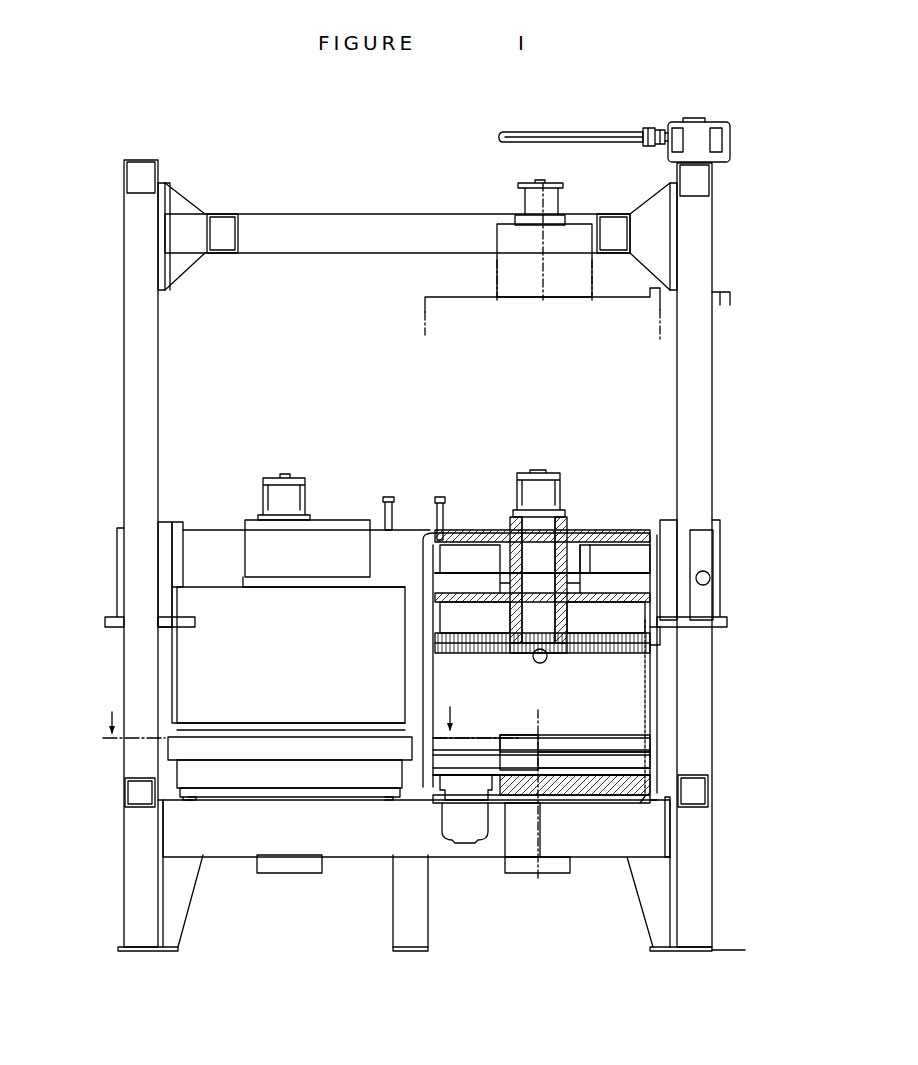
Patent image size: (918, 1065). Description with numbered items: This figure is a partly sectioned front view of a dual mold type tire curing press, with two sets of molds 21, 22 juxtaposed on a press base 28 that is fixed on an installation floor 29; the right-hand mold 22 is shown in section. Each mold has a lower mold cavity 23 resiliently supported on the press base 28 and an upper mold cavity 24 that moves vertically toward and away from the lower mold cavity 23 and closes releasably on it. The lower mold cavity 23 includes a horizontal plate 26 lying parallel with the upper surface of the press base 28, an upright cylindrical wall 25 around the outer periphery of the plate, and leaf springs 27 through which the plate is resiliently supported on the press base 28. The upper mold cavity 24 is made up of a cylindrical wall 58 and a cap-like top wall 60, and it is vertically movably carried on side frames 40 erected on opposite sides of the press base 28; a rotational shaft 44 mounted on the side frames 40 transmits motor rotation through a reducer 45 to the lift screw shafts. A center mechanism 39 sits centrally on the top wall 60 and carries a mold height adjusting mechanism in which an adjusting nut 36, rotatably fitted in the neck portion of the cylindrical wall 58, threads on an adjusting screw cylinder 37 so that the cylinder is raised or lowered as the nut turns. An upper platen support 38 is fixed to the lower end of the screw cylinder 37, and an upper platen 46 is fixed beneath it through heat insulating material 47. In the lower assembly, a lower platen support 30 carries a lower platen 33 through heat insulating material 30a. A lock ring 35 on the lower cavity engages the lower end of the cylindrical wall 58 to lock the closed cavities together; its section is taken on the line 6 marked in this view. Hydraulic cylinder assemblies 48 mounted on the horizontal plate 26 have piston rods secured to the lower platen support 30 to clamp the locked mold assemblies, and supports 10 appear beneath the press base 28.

The section line VI—VI 6 is at (305, 719).
The support block 10 is at (310, 868).
The mold 21 is at (172, 652).
The mold 22 is at (632, 676).
The lower mold cavity 23 is at (662, 787).
The upper mold cavity 24 is at (659, 698).
The cylindrical wall 25 is at (240, 765).
The horizontal plate 26 is at (240, 790).
The leaf springs 27 is at (188, 800).
The press base 28 is at (652, 842).
The installation floor 29 is at (730, 950).
The lower platen support 30 is at (555, 760).
The heat insulating material 30a is at (620, 752).
The lower platen 33 is at (590, 745).
The lock ring 35 is at (205, 750).
The adjusting nut 36 is at (497, 538).
The adjusting screw cylinder 37 is at (562, 532).
The upper platen support 38 is at (632, 540).
The center mechanism 39 is at (260, 495).
The side frames 40 is at (124, 446).
The rotational shaft 44 is at (531, 130).
The reducer 45 is at (718, 120).
The upper platen 46 is at (585, 648).
The heat insulating material 47 is at (490, 648).
The cylinder assemblies 48 is at (457, 840).
The cylindrical wall 58 is at (190, 617).
The top wall 60 is at (207, 530).